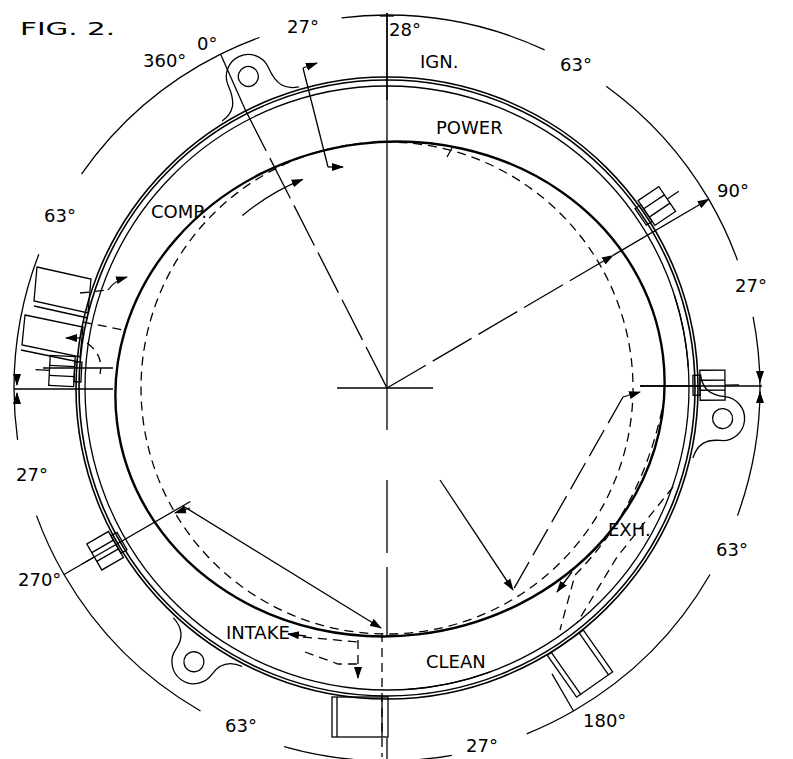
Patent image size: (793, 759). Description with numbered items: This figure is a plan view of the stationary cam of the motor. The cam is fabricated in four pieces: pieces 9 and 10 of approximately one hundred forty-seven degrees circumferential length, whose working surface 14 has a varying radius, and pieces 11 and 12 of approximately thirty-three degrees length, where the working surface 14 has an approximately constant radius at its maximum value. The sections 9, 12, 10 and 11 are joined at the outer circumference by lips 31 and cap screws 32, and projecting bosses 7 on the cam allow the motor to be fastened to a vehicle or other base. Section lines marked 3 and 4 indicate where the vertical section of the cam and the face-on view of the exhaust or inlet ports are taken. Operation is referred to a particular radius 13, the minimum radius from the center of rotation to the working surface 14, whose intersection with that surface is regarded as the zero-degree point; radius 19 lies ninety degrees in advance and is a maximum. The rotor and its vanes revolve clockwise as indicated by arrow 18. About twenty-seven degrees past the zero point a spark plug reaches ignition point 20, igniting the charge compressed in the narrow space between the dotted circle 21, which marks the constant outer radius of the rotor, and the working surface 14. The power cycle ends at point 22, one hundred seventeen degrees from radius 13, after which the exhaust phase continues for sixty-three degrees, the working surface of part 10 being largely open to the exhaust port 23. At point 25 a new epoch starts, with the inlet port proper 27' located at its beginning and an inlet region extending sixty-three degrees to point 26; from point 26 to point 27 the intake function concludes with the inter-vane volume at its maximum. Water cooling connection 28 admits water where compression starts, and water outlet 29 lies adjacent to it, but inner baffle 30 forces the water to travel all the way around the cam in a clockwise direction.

The section line 3— 3 is at (330, 111).
The section line 4— 4 is at (405, 507).
The projecting bosses 7 is at (447, 371).
The cam piece 9 is at (389, 388).
The cam piece 10 is at (454, 659).
The cam piece 11 is at (387, 388).
The cam piece 12 is at (671, 331).
The radius 13 is at (304, 221).
The working surface 14 is at (391, 388).
The arrow 18 is at (280, 197).
The radius 19 is at (548, 293).
The ignition point 20 is at (401, 56).
The dotted circle 21 is at (449, 161).
The point 22 is at (665, 375).
The exhaust port 23 is at (610, 553).
The point 25 is at (386, 644).
The point 26 is at (251, 582).
The point 27 is at (89, 382).
The inlet port 27' is at (360, 695).
The water cooling connection 28 is at (71, 292).
The water outlet 29 is at (72, 338).
The inner baffle 30 is at (108, 325).
The lips 31 is at (390, 378).
The cap screws 32 is at (386, 383).